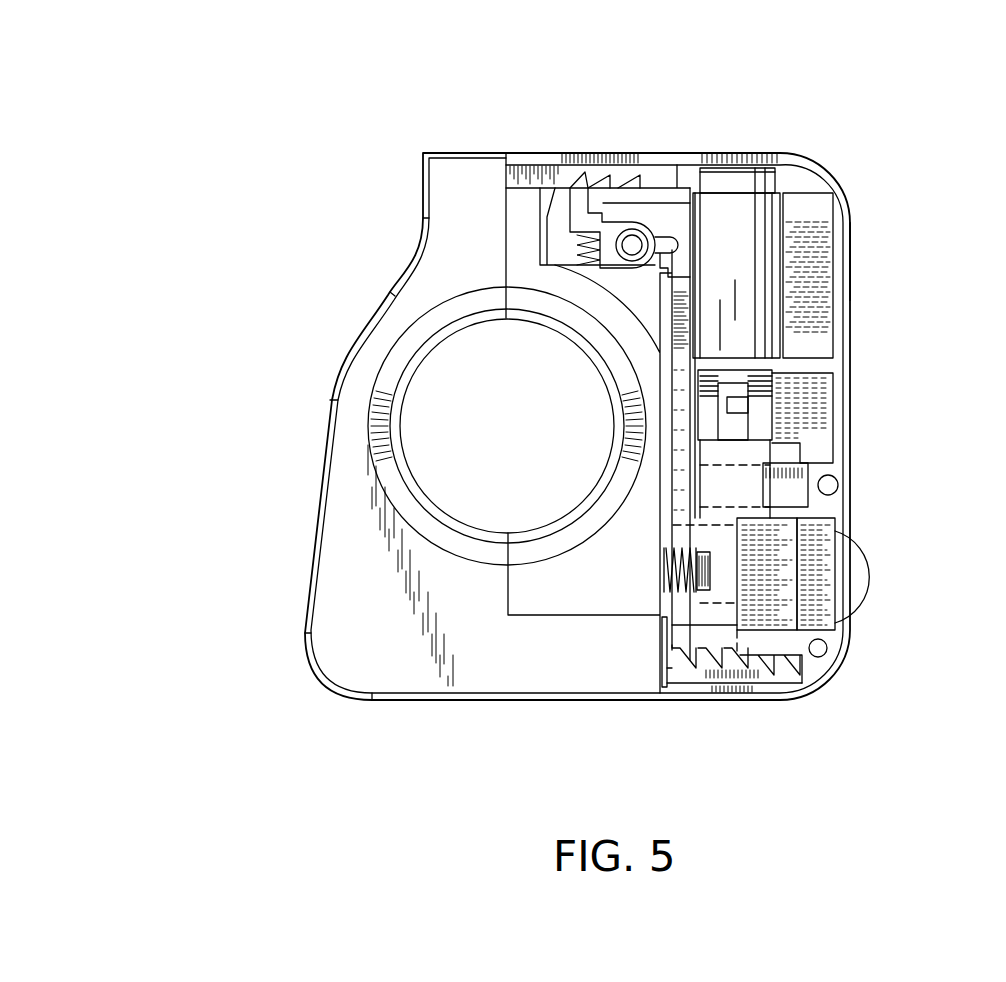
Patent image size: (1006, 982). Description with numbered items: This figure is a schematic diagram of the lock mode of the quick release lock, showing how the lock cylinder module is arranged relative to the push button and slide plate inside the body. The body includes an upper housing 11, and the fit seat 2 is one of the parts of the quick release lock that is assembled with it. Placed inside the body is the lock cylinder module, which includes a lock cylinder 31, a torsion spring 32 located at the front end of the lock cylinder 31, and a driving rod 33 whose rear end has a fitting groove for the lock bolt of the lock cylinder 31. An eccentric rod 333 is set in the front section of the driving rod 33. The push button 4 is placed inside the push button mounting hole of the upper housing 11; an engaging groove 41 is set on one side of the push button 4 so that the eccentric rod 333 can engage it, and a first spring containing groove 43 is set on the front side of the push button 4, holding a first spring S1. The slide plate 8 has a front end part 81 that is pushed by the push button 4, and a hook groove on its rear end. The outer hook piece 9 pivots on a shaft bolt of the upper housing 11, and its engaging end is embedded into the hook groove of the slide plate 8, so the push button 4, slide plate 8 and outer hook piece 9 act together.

The fit seat 2 is at (317, 465).
The outer hook piece 9 is at (600, 222).
The upper housing 11 is at (853, 222).
The lock cylinder 31 is at (822, 268).
The slide plate 8 is at (690, 325).
The torsion spring 32 is at (760, 400).
The driving rod 33 is at (790, 465).
The front end part 81 is at (798, 545).
The push button 4 is at (855, 576).
The engaging groove 41 is at (745, 575).
The eccentric rod 333 is at (725, 583).
The first spring containing groove 43 is at (740, 690).
The first spring S1 is at (683, 590).